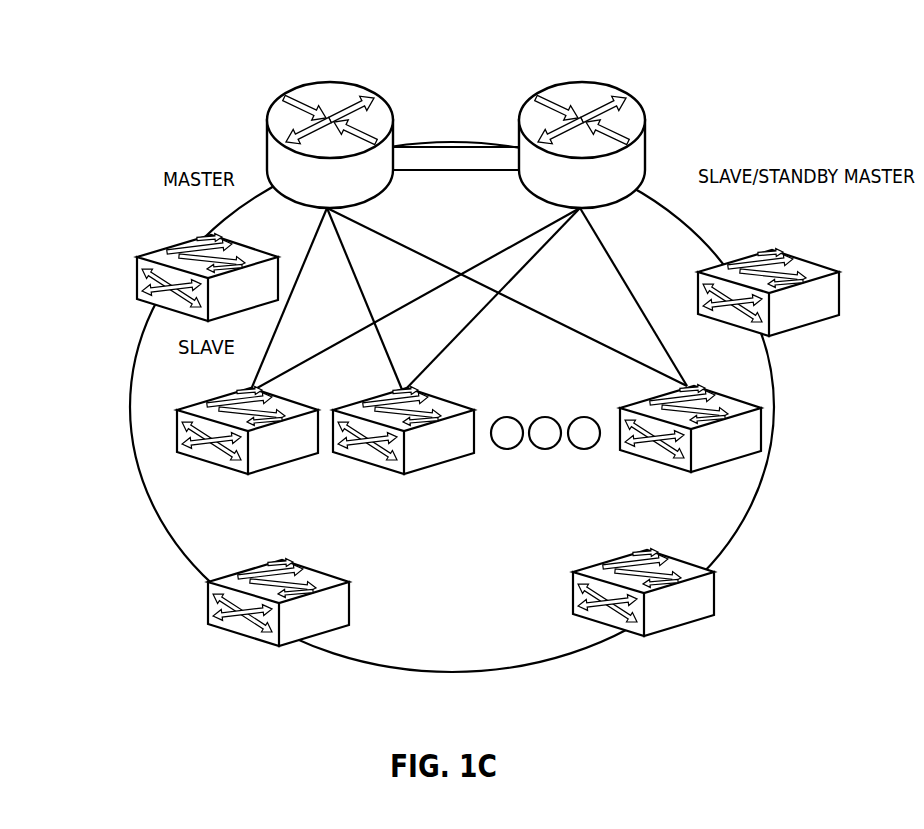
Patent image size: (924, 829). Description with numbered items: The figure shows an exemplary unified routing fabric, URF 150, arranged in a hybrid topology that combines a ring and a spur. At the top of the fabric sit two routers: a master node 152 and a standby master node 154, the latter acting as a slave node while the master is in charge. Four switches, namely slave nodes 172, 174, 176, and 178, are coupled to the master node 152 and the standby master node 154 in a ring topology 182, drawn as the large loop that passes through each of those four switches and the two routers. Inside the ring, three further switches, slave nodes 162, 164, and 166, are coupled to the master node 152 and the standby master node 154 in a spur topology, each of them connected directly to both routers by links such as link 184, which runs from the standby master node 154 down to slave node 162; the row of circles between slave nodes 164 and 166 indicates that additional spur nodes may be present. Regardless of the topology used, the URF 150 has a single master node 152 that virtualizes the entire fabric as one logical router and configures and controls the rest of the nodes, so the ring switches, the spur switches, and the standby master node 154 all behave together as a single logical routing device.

The URF 150 is at (848, 85).
The master node 152 is at (393, 130).
The standby master node 154 is at (645, 132).
The slave node 162 is at (248, 475).
The slave node 164 is at (403, 475).
The slave node 166 is at (692, 472).
The slave node 172 is at (155, 250).
The slave node 174 is at (278, 645).
The slave node 176 is at (643, 633).
The slave node 178 is at (793, 332).
The ring topology 182 is at (128, 375).
The link 184 is at (500, 250).